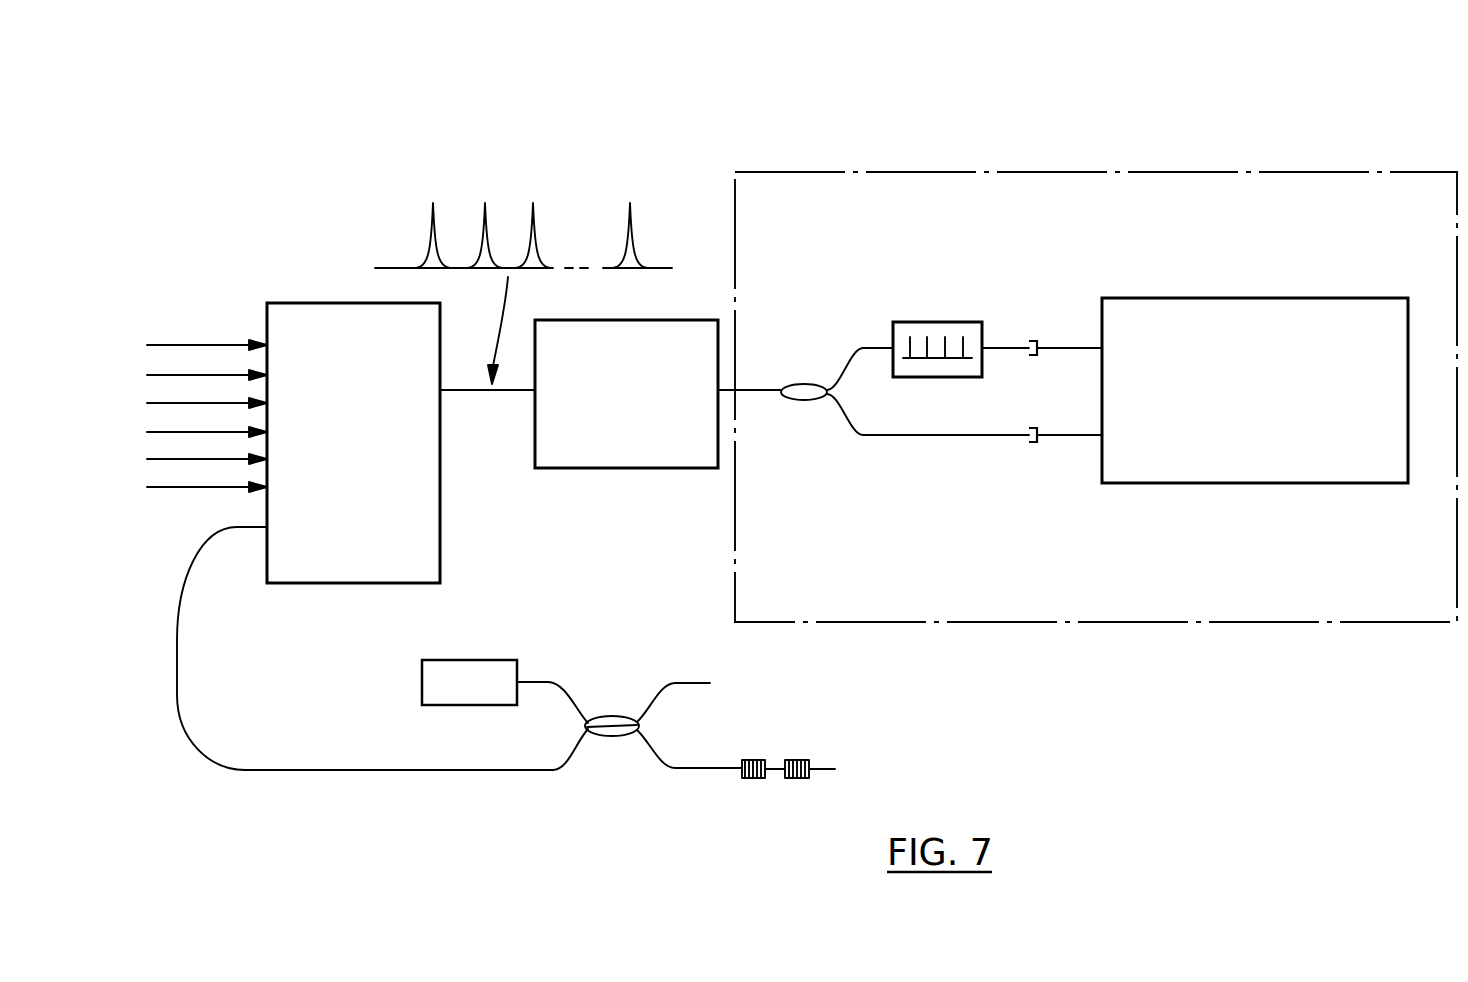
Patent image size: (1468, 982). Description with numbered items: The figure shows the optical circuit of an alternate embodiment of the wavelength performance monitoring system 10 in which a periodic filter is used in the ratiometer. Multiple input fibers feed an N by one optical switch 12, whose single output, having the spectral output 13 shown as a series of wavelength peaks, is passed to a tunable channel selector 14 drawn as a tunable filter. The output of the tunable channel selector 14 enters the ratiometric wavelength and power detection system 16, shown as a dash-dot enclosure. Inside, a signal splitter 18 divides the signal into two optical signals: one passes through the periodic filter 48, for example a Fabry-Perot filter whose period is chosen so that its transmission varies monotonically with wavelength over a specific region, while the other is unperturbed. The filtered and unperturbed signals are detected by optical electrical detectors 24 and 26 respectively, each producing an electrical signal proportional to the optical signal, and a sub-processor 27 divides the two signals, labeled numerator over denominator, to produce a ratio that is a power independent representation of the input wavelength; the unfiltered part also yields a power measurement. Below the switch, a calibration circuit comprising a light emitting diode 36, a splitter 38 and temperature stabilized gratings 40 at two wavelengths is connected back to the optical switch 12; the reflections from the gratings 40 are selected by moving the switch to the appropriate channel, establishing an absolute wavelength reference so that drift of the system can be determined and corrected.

The optical performance monitoring system 10 is at (873, 130).
The optical switch 12 is at (380, 584).
The spectral output 13 is at (632, 236).
The tunable channel selector 14 is at (657, 469).
The ratiometric wavelength and power detection system 16 is at (1253, 172).
The signal splitter 18 is at (812, 400).
The optical electrical detector 24 is at (1038, 340).
The optical electrical detector 26 is at (1032, 446).
The sub-processor 27 is at (1250, 298).
The light emitting diode 36 is at (482, 660).
The splitter 38 is at (612, 715).
The temperature stabilized gratings 40 is at (750, 760).
The periodic filter 48 is at (943, 322).